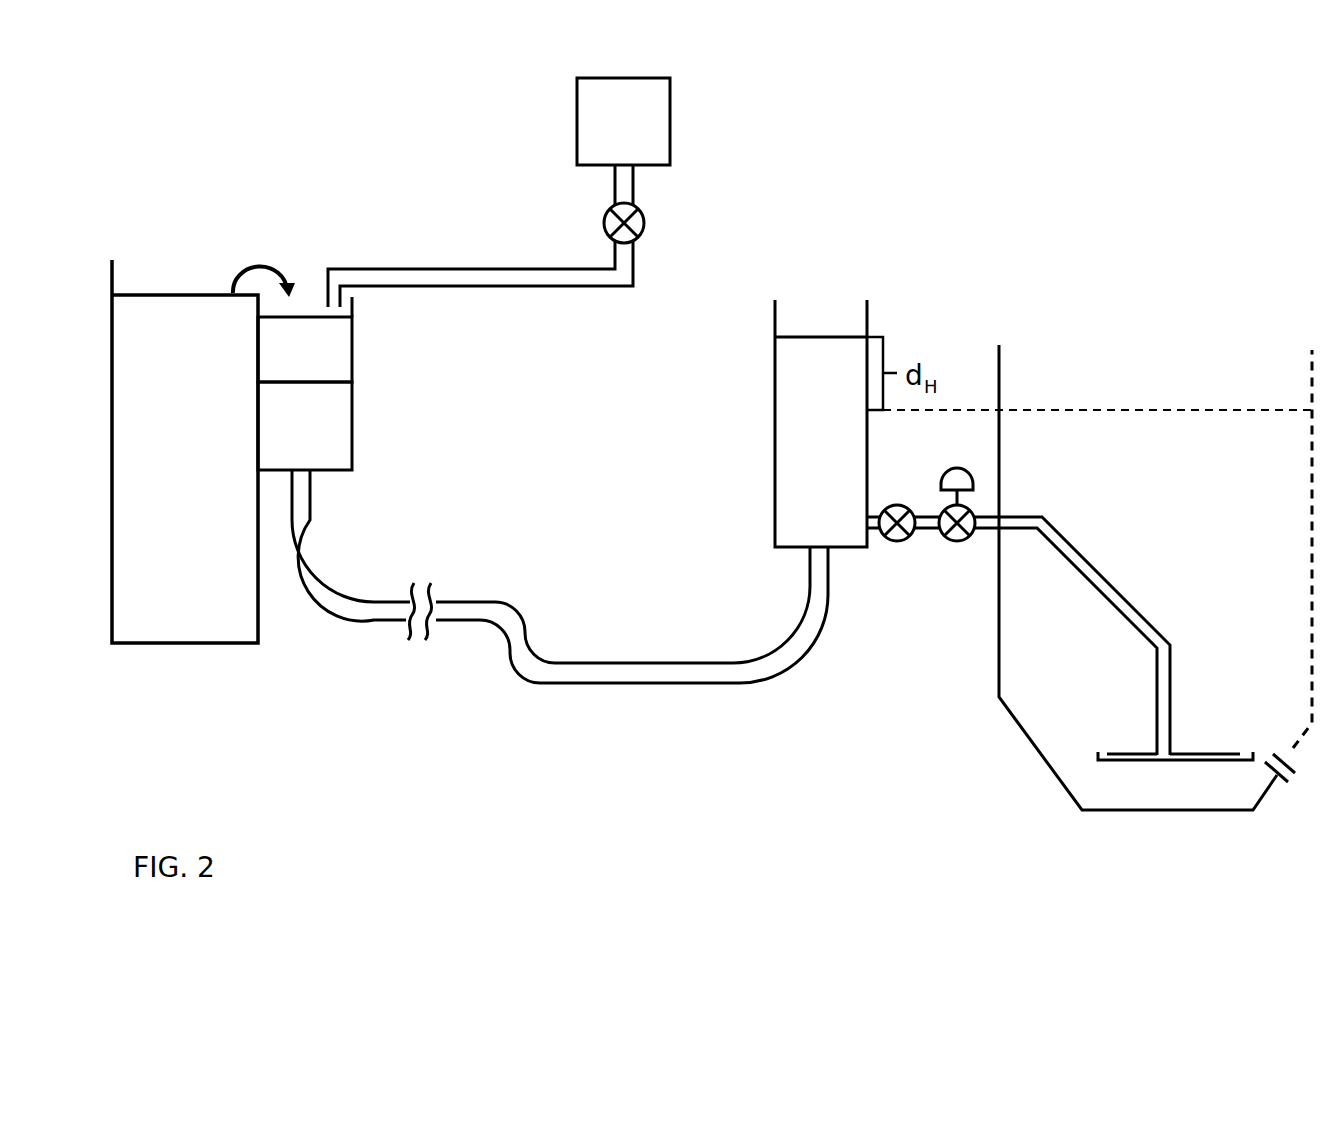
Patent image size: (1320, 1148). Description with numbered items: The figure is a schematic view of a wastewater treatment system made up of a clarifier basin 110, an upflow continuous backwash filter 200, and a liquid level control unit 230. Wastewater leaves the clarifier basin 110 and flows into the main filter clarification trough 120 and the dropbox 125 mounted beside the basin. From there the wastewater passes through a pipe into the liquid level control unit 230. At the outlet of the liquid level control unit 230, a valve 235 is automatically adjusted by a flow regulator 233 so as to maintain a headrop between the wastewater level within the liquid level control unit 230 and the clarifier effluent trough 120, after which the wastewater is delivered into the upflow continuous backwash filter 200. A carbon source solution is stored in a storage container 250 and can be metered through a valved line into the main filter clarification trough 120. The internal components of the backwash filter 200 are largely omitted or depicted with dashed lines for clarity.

The clarifier basin 110 is at (203, 451).
The main filter clarification trough 120 is at (305, 339).
The dropbox 125 is at (305, 426).
The storage container 250 is at (499, 192).
The liquid level control unit 230 is at (821, 423).
The flow regulator 233 is at (947, 473).
The valve 235 is at (945, 543).
The upflow continuous backwash filter 200 is at (988, 780).